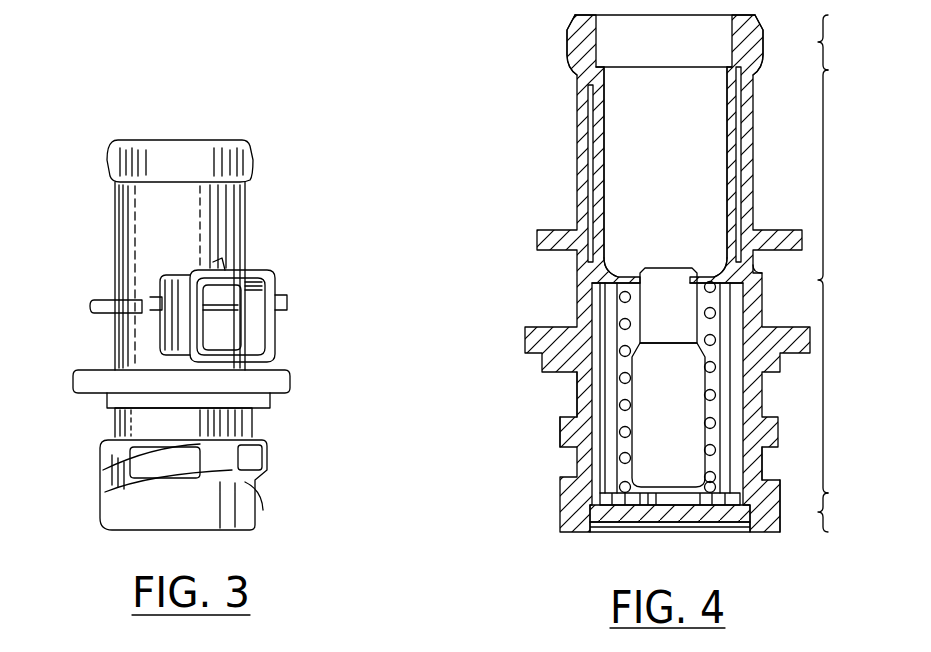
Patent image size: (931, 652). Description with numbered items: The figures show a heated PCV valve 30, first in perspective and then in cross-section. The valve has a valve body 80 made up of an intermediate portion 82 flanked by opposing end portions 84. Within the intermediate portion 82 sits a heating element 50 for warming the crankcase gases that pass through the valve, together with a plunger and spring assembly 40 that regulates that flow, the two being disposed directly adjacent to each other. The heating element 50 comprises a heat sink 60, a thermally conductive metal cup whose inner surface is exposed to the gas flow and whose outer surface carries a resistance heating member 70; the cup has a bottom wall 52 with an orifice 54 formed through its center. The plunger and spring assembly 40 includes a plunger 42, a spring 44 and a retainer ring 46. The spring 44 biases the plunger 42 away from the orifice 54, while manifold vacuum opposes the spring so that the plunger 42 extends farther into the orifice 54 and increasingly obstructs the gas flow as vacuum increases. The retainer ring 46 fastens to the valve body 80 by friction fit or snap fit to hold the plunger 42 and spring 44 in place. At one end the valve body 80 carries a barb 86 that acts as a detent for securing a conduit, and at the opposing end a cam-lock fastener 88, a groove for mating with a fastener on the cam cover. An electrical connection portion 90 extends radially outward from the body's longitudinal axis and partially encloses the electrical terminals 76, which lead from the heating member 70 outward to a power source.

In FIG. 3, the heated PCV valve 30 is at (272, 136).
In FIG. 4, the heated PCV valve 30 is at (485, 57).
In FIG. 3, the barb 86 is at (210, 150).
In FIG. 4, the barb 86 is at (567, 25).
In FIG. 3, the electrical connection portion 90 is at (270, 268).
In FIG. 3, the electrical terminals 76 is at (225, 308).
In FIG. 3, the valve body 80 is at (252, 425).
In FIG. 4, the valve body 80 is at (772, 492).
In FIG. 3, the cam-lock fastener 88 is at (112, 462).
In FIG. 4, the cam-lock fastener 88 is at (575, 460).
In FIG. 4, the heat sink 60 is at (600, 70).
In FIG. 4, the resistance heating member 70 is at (590, 100).
In FIG. 4, the heating element 50 is at (722, 137).
In FIG. 4, the bottom wall 52 is at (746, 222).
In FIG. 4, the orifice 54 is at (700, 265).
In FIG. 4, the spring 44 is at (605, 295).
In FIG. 4, the plunger and spring assembly 40 is at (667, 428).
In FIG. 4, the plunger 42 is at (640, 415).
In FIG. 4, the retainer ring 46 is at (690, 520).
In FIG. 4, the end portions 84 is at (847, 273).
In FIG. 4, the intermediate portion 82 is at (844, 281).